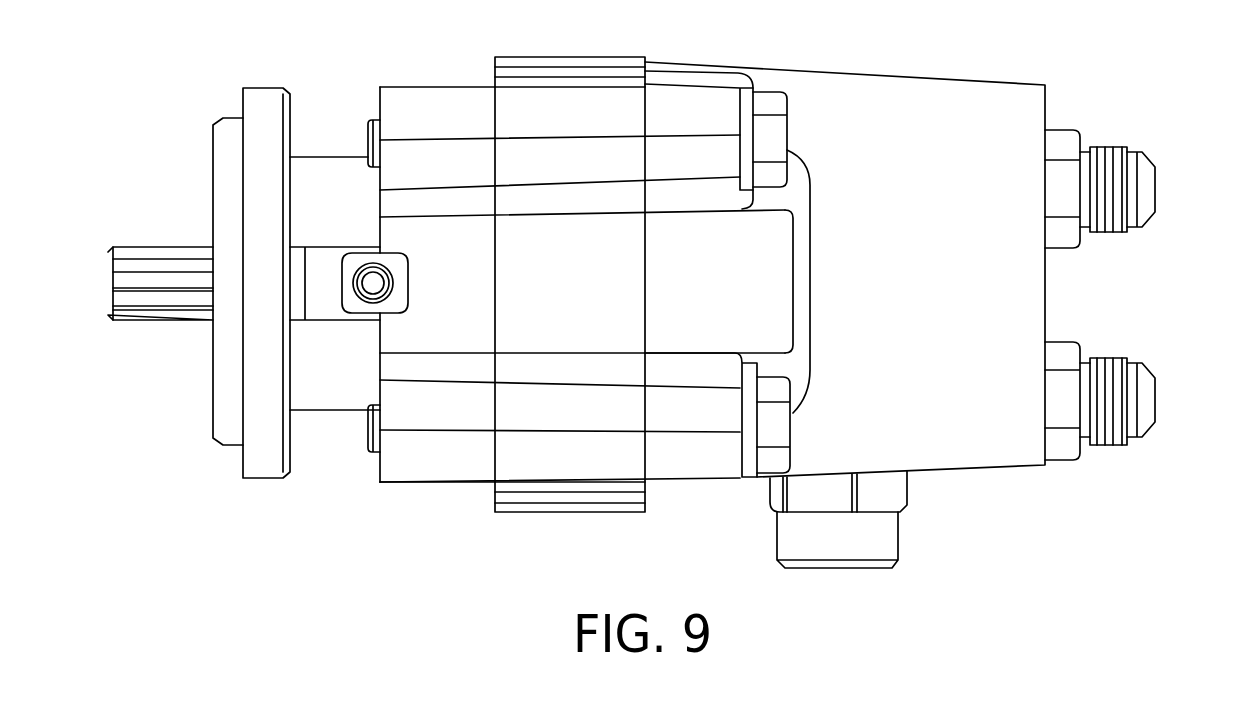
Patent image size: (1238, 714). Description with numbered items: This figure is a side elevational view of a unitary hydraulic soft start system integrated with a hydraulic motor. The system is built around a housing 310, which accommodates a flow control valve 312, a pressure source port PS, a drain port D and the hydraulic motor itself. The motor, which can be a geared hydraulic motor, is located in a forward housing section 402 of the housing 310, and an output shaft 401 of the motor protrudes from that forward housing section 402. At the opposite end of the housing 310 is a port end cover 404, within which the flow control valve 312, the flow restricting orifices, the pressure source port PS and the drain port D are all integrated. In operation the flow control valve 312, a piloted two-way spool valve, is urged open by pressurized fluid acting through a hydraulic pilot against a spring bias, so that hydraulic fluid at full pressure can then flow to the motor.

The housing 310 is at (422, 532).
The flow control valve 312 is at (858, 568).
The output shaft 401 is at (160, 318).
The forward housing section 402 is at (423, 83).
The port end cover 404 is at (980, 467).
The pressure source port PS is at (1143, 157).
The drain port D is at (1143, 368).